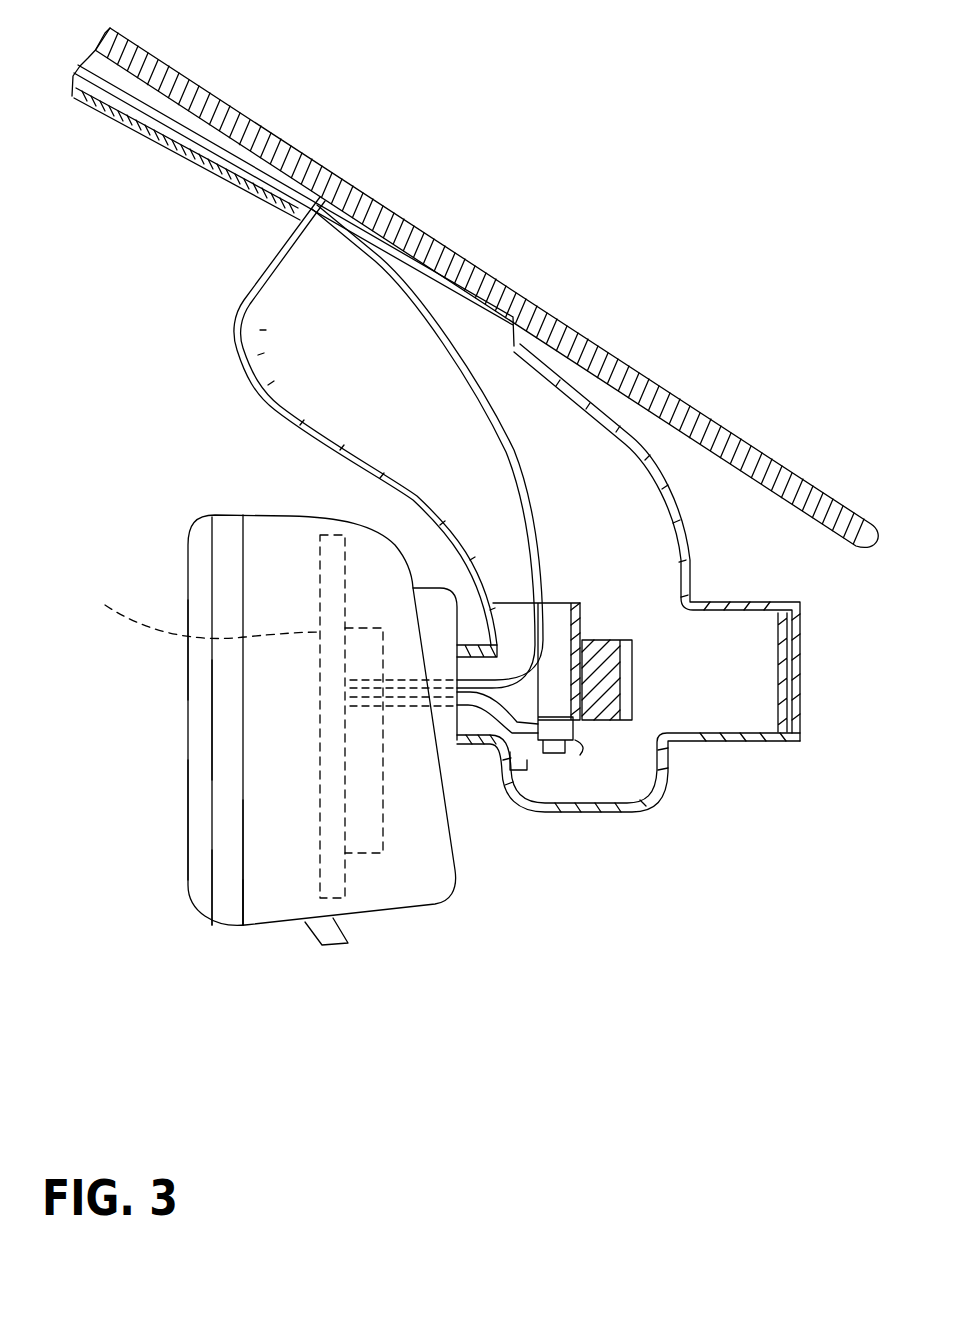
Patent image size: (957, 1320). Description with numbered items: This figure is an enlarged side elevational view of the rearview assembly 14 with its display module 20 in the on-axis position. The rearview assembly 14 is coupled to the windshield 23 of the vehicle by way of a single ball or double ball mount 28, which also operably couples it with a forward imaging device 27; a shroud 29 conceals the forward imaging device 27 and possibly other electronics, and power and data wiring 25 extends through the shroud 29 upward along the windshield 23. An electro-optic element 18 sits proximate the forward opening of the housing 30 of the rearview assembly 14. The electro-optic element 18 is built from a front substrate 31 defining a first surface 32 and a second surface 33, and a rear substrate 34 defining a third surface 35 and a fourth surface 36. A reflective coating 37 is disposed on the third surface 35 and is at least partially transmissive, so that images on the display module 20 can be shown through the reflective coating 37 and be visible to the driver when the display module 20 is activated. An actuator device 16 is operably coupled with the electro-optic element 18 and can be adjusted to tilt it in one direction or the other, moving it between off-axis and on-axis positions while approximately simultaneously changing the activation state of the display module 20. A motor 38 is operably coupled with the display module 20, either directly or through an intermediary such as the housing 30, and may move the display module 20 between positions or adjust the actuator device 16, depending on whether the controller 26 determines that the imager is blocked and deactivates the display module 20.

The rearview assembly 14 is at (271, 513).
The actuator device 16 is at (320, 945).
The electro-optic element 18 is at (197, 822).
The display module 20 is at (192, 614).
The windshield 23 is at (636, 378).
The power and data wiring 25 is at (423, 313).
The controller 26 is at (380, 855).
The forward imaging device 27 is at (593, 722).
The double ball mount 28 is at (474, 750).
The shroud 29 is at (723, 737).
The housing 30 is at (385, 885).
The front substrate 31 is at (203, 656).
The first surface 32 is at (190, 594).
The second surface 33 is at (210, 578).
The rear substrate 34 is at (232, 863).
The third surface 35 is at (213, 884).
The fourth surface 36 is at (244, 903).
The reflective coating 37 is at (205, 718).
The motor 38 is at (431, 586).